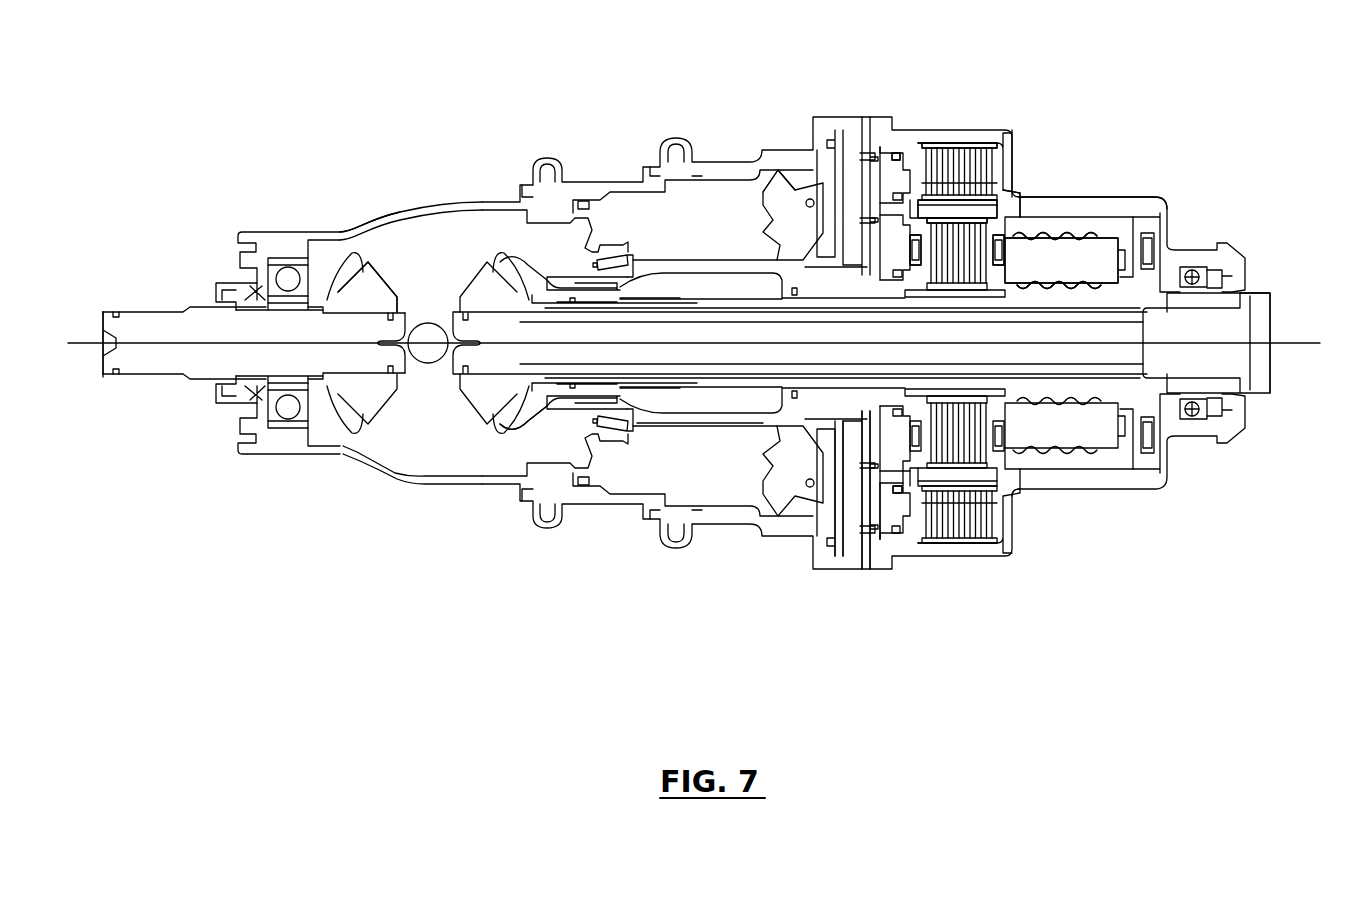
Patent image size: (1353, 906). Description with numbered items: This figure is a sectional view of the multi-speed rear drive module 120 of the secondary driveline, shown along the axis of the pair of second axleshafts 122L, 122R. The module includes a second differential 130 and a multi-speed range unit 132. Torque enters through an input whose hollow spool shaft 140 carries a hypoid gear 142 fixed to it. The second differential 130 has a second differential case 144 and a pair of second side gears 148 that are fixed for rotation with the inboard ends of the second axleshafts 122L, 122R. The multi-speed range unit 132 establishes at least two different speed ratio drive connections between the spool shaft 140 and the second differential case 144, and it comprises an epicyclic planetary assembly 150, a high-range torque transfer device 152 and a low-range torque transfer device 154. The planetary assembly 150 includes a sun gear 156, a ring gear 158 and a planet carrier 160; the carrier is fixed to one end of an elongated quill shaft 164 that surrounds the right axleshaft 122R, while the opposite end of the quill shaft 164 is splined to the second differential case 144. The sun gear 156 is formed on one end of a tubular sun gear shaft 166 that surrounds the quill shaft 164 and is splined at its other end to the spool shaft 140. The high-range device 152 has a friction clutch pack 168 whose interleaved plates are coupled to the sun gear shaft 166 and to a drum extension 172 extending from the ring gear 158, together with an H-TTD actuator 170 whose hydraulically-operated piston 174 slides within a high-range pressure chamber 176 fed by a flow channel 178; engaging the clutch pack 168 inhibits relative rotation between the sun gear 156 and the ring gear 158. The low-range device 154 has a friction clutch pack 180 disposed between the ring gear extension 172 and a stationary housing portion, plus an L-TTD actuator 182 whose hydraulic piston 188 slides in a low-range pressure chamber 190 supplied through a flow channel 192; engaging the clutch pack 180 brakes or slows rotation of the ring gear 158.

The multi-speed rear drive module 120 is at (1087, 112).
The second axleshaft 122L is at (136, 363).
The second axleshaft 122R is at (1260, 296).
The second differential 130 is at (371, 255).
The multi-speed range unit 132 is at (1016, 476).
The spool shaft 140 is at (663, 420).
The hypoid gear 142 is at (793, 188).
The second differential case 144 is at (512, 423).
The second side gears 148 is at (372, 288).
The epicyclic planetary assembly 150 is at (1134, 209).
The high-range torque transfer device 152 is at (1003, 219).
The low-range torque transfer device 154 is at (920, 140).
The sun gear 156 is at (1080, 293).
The ring gear 158 is at (1057, 228).
The planet carrier 160 is at (1077, 268).
The quill shaft 164 is at (935, 380).
The sun gear shaft 166 is at (933, 293).
The friction clutch pack 168 is at (970, 263).
The H-TTD actuator 170 is at (916, 268).
The drum extension 172 is at (970, 212).
The hydraulically-operated piston 174 is at (903, 520).
The high-range pressure chamber 176 is at (870, 510).
The flow channel 178 is at (862, 533).
The friction clutch pack 180 is at (963, 165).
The L-TTD actuator 182 is at (897, 150).
The hydraulic piston 188 is at (897, 430).
The low-range pressure chamber 190 is at (890, 447).
The flow channel 192 is at (847, 490).